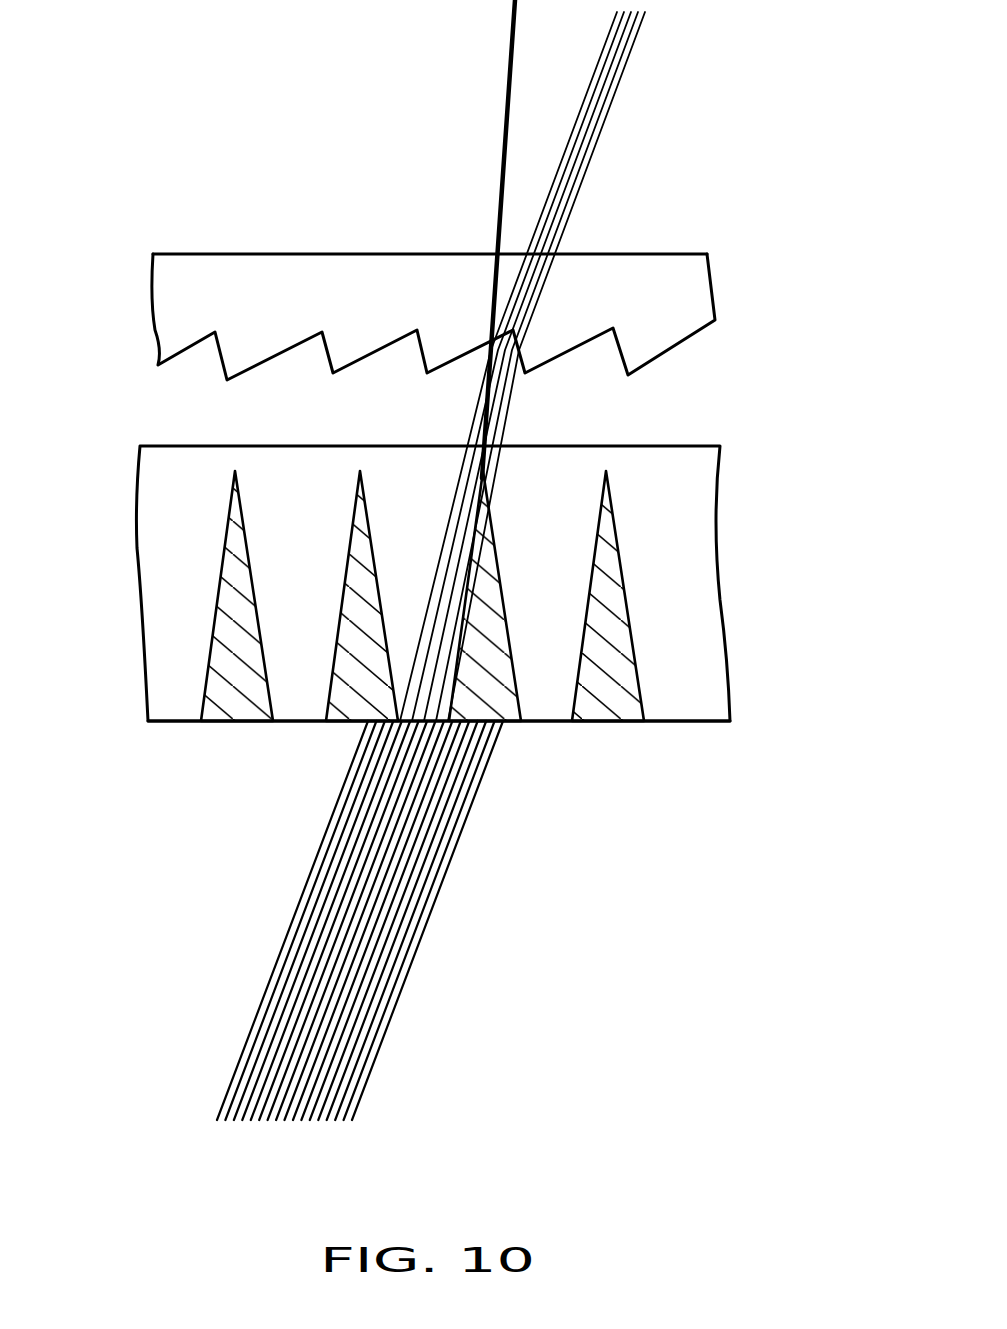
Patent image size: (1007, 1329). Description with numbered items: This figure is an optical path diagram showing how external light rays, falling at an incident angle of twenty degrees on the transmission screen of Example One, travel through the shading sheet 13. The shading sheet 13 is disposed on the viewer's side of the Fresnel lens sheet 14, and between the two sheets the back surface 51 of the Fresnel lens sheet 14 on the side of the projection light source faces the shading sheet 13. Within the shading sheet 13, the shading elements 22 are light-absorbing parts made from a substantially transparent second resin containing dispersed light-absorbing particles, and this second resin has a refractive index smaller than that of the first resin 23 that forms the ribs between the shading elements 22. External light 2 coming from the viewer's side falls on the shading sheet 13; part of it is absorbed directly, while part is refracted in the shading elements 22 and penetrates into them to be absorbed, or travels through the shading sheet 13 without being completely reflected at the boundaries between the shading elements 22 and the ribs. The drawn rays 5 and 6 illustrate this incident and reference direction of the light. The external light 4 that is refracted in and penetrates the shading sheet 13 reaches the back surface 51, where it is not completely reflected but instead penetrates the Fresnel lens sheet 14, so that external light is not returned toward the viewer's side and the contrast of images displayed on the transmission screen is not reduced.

The external light 2 is at (413, 891).
The external light 4 is at (488, 418).
The incident light beam 5 is at (604, 118).
The normal line 6 is at (506, 83).
The shading sheet 13 is at (148, 548).
The Fresnel lens sheet 14 is at (183, 300).
The shading elements 22 is at (612, 705).
The first resin 23 is at (687, 702).
The back surface 51 is at (638, 254).